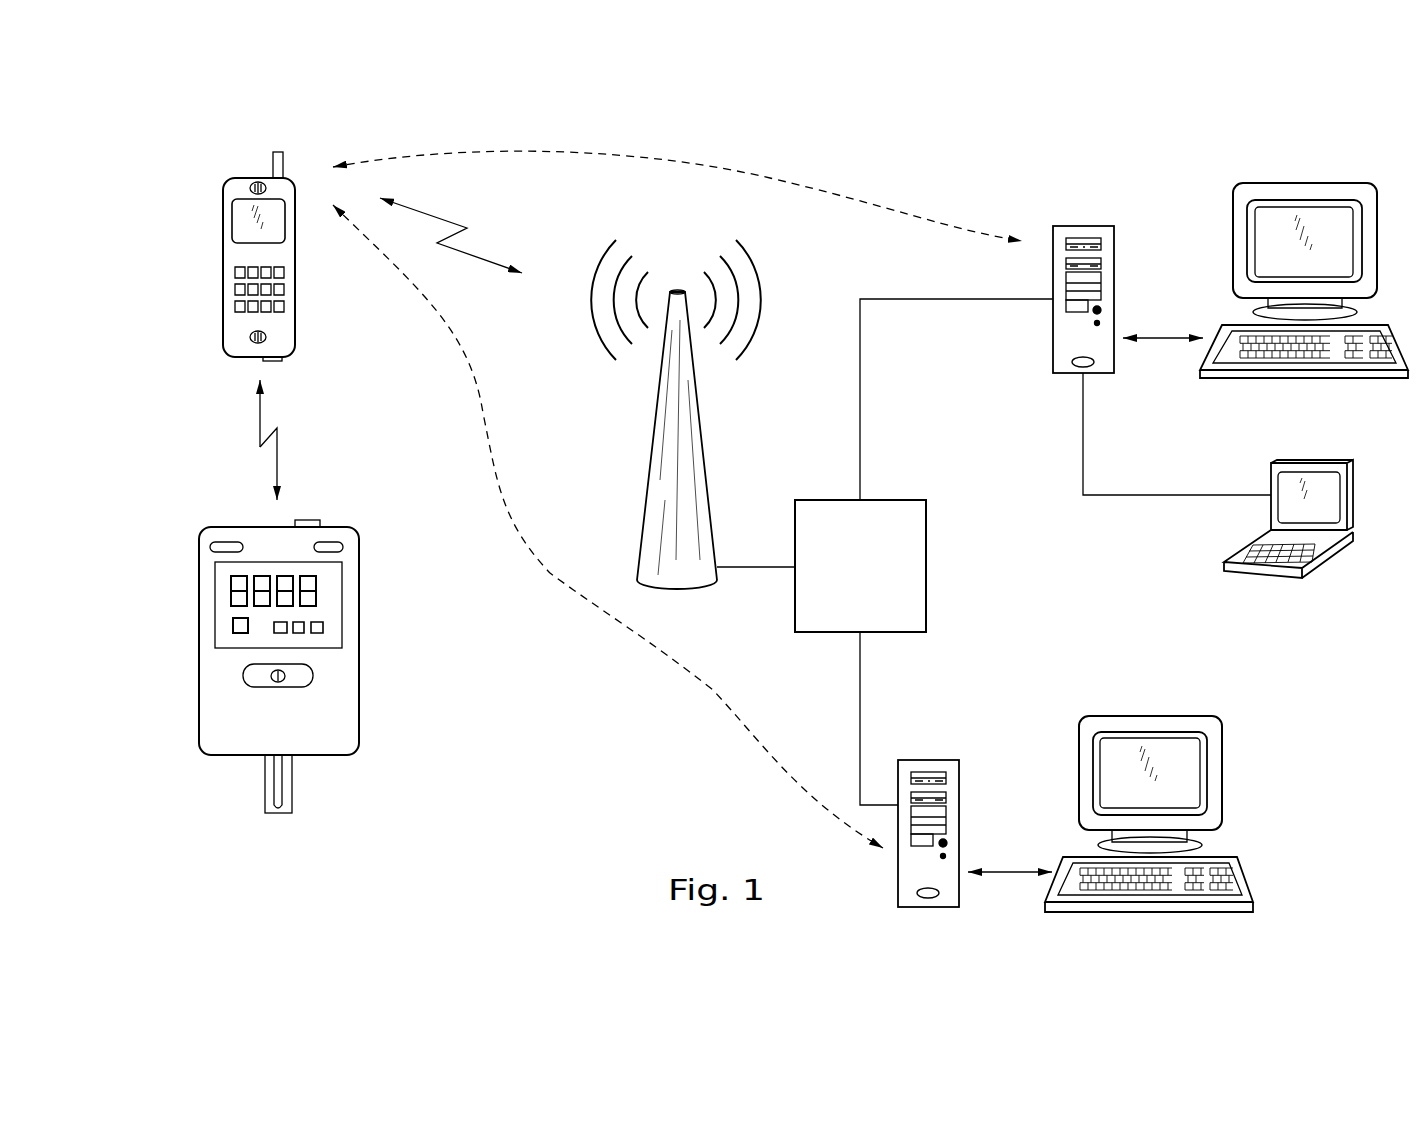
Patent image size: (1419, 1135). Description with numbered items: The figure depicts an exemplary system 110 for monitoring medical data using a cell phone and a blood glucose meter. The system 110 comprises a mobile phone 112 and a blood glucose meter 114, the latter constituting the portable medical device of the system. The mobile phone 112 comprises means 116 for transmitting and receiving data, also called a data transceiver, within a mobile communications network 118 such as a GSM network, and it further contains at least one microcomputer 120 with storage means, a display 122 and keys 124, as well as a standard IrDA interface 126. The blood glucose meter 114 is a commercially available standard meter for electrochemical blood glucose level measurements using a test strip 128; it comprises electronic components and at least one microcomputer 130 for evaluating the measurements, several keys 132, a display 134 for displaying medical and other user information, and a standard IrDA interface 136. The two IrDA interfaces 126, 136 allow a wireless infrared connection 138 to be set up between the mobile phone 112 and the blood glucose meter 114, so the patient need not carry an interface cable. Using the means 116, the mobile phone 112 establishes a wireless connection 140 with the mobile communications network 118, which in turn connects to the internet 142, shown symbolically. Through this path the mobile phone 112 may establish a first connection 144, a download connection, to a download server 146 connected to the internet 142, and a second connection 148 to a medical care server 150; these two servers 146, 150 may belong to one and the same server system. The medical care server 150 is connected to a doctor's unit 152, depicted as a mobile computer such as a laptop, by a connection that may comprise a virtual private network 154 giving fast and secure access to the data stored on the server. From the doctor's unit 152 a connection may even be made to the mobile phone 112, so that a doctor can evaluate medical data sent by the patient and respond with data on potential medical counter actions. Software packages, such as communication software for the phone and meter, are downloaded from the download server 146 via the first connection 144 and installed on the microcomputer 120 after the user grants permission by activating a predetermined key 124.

The system for monitoring medical data 110 is at (490, 767).
The mobile phone 112 is at (292, 370).
The blood glucose meter 114 is at (370, 615).
The means for transmitting and receiving data 116 is at (237, 150).
The mobile communications network 118 is at (668, 230).
The microcomputer 120 is at (245, 254).
The display 122 is at (250, 218).
The keys 124 is at (237, 292).
The IrDA interface 126 is at (267, 360).
The test strip 128 is at (285, 785).
The microcomputer 130 is at (328, 692).
The keys 132 is at (217, 543).
The display 134 is at (225, 608).
The IrDA interface 136 is at (310, 523).
The wireless infrared connection 138 is at (245, 435).
The wireless connection 140 is at (480, 258).
The internet 142 is at (790, 577).
The first connection 144 is at (703, 698).
The download server 146 is at (958, 745).
The second connection 148 is at (770, 178).
The medical care server 150 is at (1138, 393).
The doctor's unit 152 is at (1213, 582).
The virtual private network 154 is at (1082, 435).